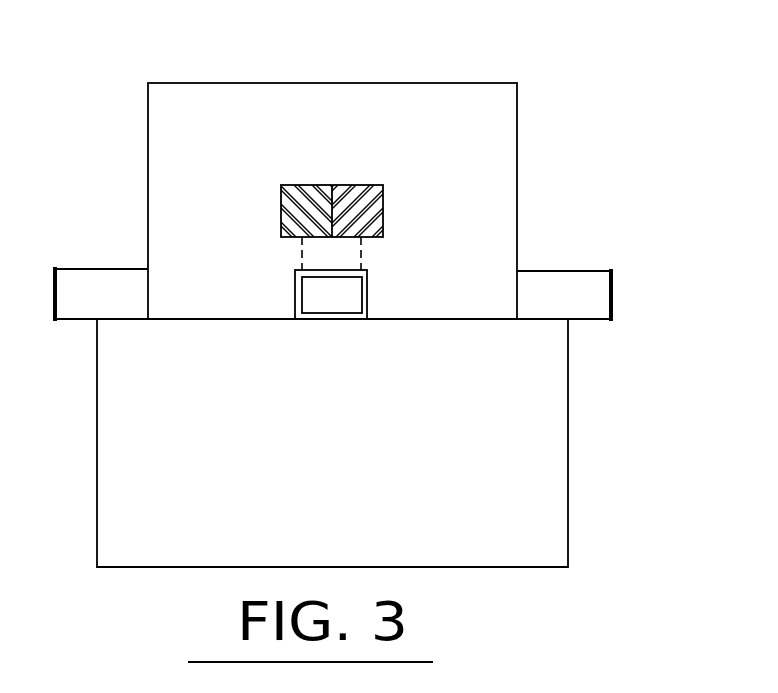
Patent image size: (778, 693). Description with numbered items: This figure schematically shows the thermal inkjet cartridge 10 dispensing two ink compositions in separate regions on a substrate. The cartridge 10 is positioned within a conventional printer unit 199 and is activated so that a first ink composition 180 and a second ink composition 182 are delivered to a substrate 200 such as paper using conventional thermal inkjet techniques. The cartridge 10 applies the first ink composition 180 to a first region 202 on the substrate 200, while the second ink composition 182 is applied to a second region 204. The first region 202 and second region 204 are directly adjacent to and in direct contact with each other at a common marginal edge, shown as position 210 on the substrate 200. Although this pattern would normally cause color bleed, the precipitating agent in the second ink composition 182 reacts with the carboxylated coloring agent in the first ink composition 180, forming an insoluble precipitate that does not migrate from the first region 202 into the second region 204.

The ink cartridge 10 is at (357, 297).
The ink composition 1 180 is at (302, 252).
The ink composition 2 182 is at (361, 252).
The printer unit 199 is at (547, 443).
The substrate 200 is at (497, 152).
The first region 202 is at (282, 185).
The second region 204 is at (383, 185).
The position 210 is at (332, 185).